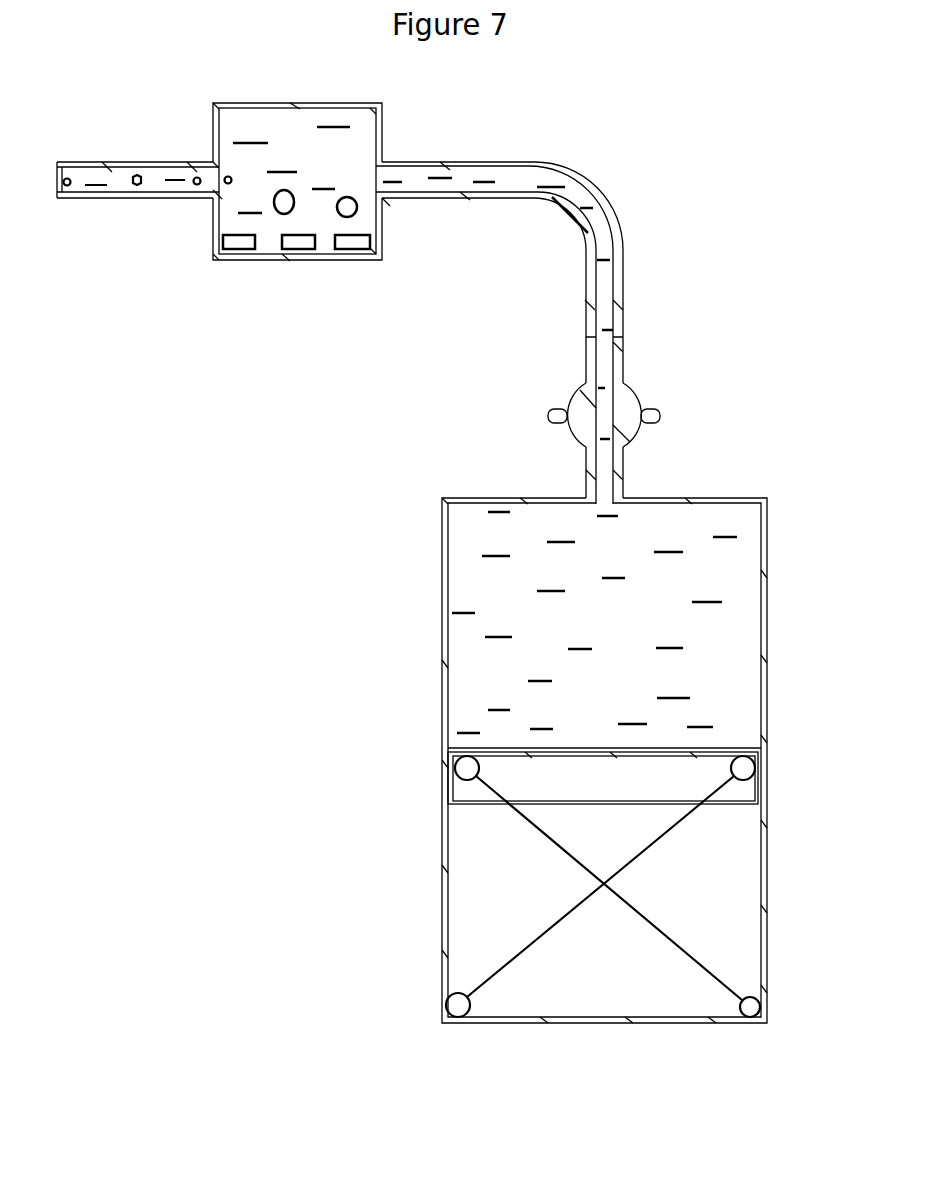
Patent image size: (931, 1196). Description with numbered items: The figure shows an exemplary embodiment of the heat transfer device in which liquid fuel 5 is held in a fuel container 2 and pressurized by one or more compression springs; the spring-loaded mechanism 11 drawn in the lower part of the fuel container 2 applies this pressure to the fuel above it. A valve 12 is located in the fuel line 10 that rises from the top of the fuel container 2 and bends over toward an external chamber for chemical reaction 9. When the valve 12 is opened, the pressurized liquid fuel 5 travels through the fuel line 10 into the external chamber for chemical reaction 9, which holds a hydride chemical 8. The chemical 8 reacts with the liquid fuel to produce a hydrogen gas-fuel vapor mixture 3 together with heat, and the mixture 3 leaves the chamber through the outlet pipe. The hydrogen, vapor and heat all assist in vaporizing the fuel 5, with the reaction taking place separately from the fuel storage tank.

The fuel container 2 is at (422, 682).
The hydrogen gas-fuel vapor mixture 3 is at (143, 207).
The fuel 5 is at (478, 583).
The chemical 8 is at (368, 247).
The external chamber for chemical reaction 9 is at (308, 268).
The fuel line 10 is at (633, 198).
The scissor lift 11 is at (533, 915).
The valve 12 is at (663, 402).